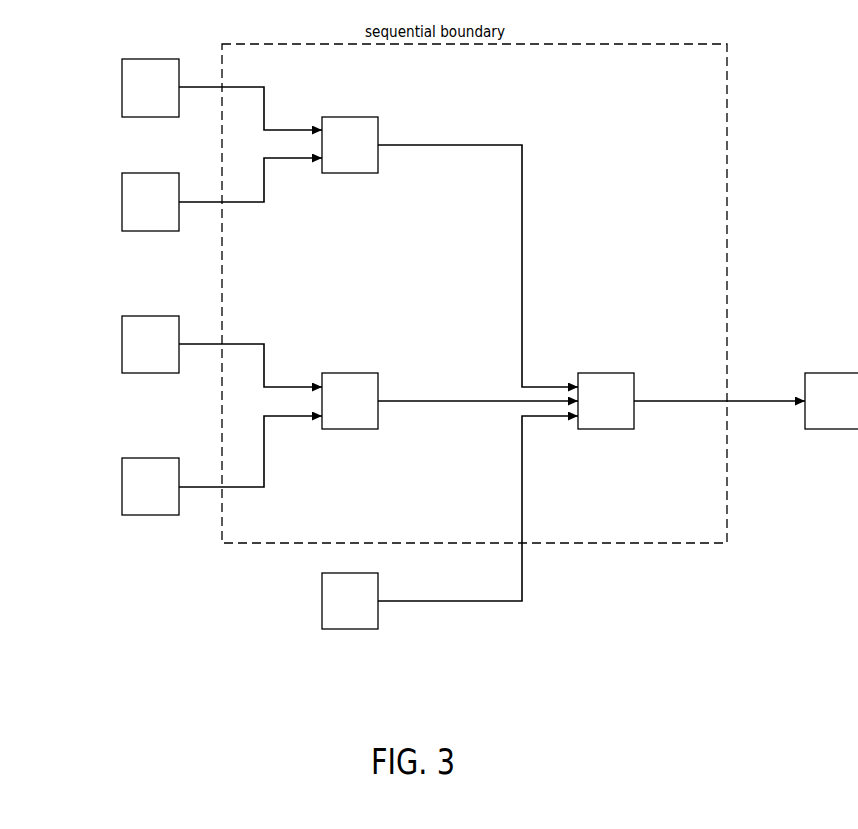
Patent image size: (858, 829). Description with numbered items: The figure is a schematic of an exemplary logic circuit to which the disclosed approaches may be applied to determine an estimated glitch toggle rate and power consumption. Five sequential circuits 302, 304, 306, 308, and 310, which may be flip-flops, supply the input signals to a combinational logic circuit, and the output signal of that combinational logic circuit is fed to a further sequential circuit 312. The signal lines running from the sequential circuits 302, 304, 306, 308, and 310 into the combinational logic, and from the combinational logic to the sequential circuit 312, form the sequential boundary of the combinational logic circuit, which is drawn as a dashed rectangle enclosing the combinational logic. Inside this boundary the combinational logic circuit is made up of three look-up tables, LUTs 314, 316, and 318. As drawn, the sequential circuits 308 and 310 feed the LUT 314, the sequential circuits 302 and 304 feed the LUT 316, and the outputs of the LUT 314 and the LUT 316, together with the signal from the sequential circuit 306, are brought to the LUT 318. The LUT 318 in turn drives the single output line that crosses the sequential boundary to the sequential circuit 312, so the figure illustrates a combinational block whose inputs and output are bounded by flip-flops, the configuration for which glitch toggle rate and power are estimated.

The sequential circuit 302 is at (137, 364).
The sequential circuit 304 is at (137, 506).
The sequential circuit 306 is at (336, 621).
The sequential circuit 308 is at (137, 107).
The sequential circuit 310 is at (137, 221).
The sequential circuit 312 is at (820, 421).
The LUT 314 is at (336, 165).
The LUT 316 is at (336, 421).
The LUT 318 is at (592, 421).